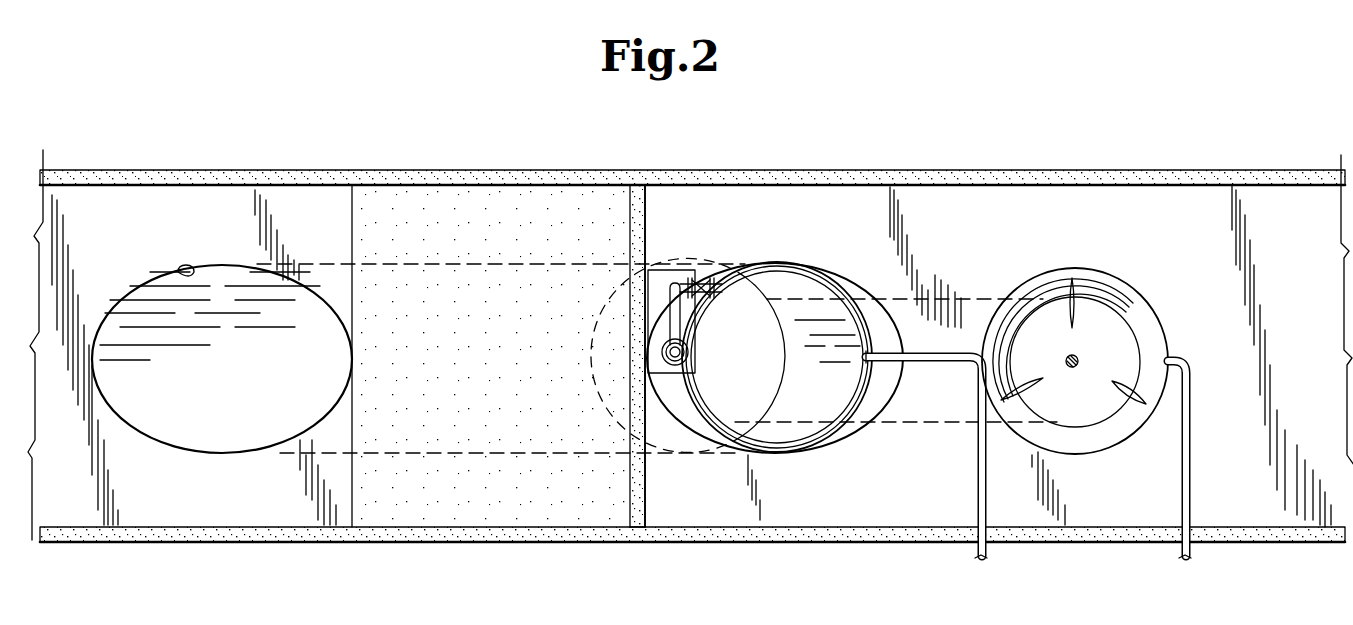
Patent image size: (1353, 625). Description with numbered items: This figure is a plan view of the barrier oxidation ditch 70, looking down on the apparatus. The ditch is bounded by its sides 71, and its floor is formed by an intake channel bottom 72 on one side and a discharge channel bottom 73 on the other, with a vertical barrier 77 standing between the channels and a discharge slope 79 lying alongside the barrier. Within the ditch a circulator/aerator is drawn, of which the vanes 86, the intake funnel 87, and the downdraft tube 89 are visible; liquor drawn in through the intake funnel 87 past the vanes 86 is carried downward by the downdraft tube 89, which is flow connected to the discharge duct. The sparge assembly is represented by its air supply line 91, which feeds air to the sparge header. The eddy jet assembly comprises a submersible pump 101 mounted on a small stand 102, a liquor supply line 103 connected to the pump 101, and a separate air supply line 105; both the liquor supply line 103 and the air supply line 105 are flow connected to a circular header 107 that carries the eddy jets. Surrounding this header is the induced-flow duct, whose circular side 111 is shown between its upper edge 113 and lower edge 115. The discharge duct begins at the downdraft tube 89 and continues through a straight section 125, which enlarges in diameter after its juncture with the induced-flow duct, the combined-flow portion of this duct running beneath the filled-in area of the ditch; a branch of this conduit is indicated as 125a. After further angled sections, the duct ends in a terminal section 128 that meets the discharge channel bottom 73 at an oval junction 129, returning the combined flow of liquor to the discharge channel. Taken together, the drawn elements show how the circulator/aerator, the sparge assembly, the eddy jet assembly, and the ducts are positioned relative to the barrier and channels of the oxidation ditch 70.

The barrier oxidation ditch 70 is at (831, 160).
The sides 71 is at (1298, 527).
The intake channel bottom 72 is at (1315, 302).
The discharge channel bottom 73 is at (78, 393).
The vertical barrier 77 is at (646, 226).
The discharge slope 79 is at (470, 359).
The vanes 86 is at (1108, 378).
The intake funnel 87 is at (1160, 325).
The downdraft tube 89 is at (1108, 418).
The air supply line 91 is at (1191, 395).
The submersible pump 101 is at (663, 350).
The small stand 102 is at (725, 356).
The liquor supply line 103 is at (686, 271).
The air supply line 105 is at (977, 470).
The circular header 107 is at (865, 327).
The circular side 111 is at (830, 395).
The upper edge 113 is at (897, 334).
The lower edge 115 is at (598, 331).
The straight section 125 is at (903, 422).
The conduit branch 125a is at (441, 452).
The terminal section 128 is at (228, 383).
The oval junction 129 is at (180, 274).